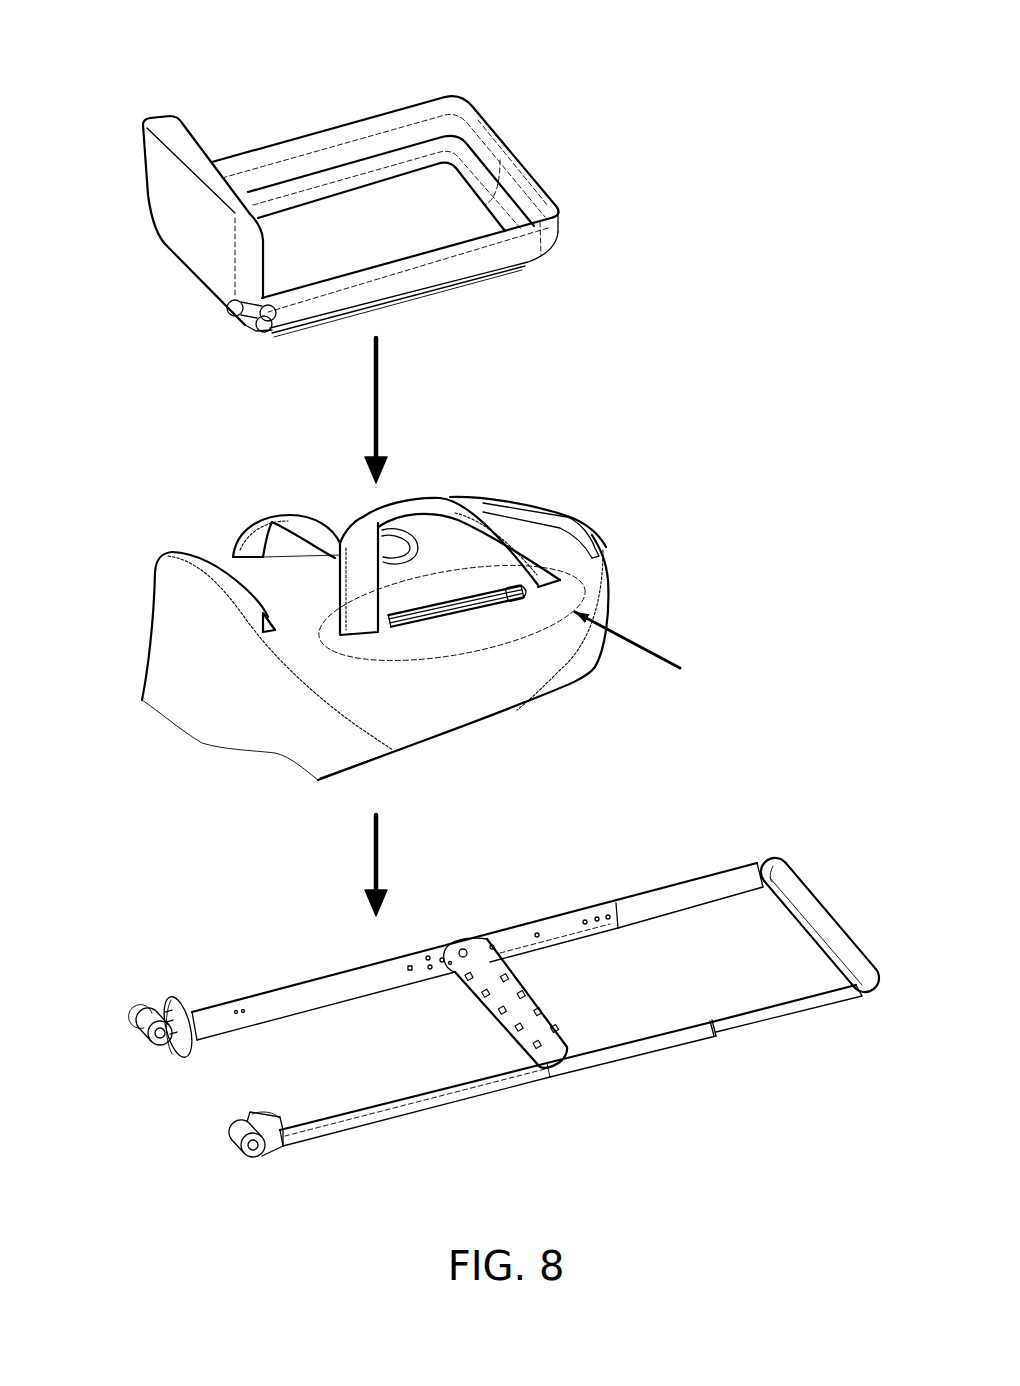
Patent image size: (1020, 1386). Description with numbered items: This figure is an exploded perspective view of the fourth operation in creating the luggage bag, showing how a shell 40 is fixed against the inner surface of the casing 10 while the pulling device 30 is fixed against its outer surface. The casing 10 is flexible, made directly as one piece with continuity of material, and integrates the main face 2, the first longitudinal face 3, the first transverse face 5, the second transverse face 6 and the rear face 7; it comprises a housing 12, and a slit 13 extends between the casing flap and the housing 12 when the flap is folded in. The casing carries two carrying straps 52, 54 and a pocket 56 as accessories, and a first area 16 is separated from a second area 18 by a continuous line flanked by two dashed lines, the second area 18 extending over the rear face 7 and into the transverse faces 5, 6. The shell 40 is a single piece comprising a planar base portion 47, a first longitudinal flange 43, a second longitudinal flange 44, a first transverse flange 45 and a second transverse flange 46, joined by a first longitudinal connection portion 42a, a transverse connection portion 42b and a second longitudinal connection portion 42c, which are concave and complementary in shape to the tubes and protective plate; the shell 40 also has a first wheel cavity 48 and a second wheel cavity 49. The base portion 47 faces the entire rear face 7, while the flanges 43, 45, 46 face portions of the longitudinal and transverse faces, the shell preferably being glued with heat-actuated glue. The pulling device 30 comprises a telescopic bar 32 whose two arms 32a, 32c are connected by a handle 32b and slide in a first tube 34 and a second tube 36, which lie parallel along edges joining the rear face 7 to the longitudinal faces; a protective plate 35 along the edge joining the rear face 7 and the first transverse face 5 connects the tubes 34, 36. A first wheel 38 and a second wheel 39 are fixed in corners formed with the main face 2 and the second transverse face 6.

The main face 2 is at (232, 570).
The first longitudinal face 3 is at (478, 688).
The first transverse face 5 is at (606, 570).
The second transverse face 6 is at (213, 690).
The rear face 7 is at (383, 760).
The casing 10 is at (392, 619).
The housing 12 is at (235, 760).
The slit 13 is at (260, 622).
The first area 16 is at (457, 487).
The second area 18 is at (596, 660).
The pulling device 30 is at (503, 1037).
The telescopic bar 32 is at (664, 963).
The arm 32a is at (658, 1040).
The handle 32b is at (810, 900).
The arm 32c is at (565, 915).
The first tube 34 is at (405, 1112).
The protective plate 35 is at (487, 975).
The second tube 36 is at (332, 990).
The first wheel 38 is at (243, 1168).
The second wheel 39 is at (145, 1058).
The shell 40 is at (451, 189).
The first longitudinal connection portion 42a is at (458, 285).
The transverse connection portion 42b is at (510, 204).
The second longitudinal connection portion 42c is at (348, 175).
The first longitudinal flange 43 is at (520, 240).
The second longitudinal flange 44 is at (300, 148).
The first transverse flange 45 is at (486, 130).
The second transverse flange 46 is at (207, 255).
The planar base portion 47 is at (414, 217).
The first wheel cavity 48 is at (379, 227).
The second wheel cavity 49 is at (232, 347).
The carrying strap 52 is at (520, 545).
The carrying strap 54 is at (303, 528).
The pocket 56 is at (500, 607).